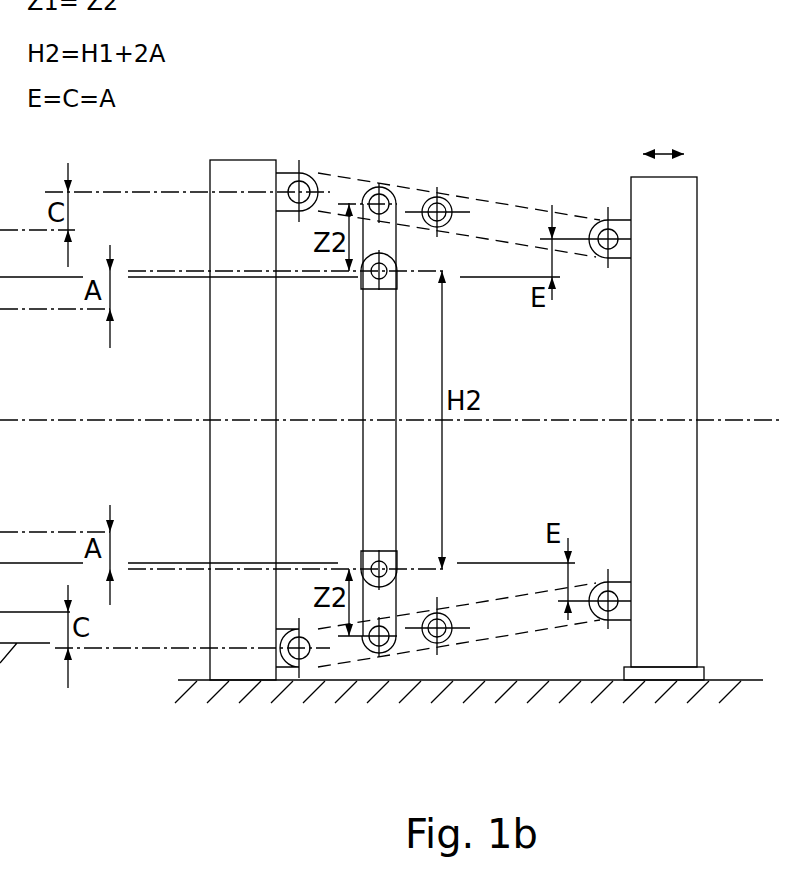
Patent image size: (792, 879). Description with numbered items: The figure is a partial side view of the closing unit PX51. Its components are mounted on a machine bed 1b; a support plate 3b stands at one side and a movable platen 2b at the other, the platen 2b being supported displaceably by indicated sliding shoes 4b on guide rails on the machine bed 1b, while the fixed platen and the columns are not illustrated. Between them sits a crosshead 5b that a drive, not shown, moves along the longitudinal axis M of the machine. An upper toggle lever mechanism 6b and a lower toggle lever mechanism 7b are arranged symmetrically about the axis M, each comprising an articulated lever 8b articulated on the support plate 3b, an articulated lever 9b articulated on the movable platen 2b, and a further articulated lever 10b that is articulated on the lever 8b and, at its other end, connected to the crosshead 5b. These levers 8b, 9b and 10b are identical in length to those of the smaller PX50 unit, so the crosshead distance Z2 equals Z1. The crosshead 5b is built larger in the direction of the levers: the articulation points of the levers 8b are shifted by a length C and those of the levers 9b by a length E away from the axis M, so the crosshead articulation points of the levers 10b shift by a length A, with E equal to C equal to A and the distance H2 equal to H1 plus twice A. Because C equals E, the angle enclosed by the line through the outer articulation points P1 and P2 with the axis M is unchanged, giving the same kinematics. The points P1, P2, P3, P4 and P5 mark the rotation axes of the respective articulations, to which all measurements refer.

The machine bed 1b is at (702, 698).
The movable platen 2b is at (687, 177).
The support plate 3b is at (243, 160).
The sliding shoes 4b is at (675, 668).
The crosshead 5b is at (385, 348).
The upper toggle lever mechanism 6b is at (507, 172).
The lower toggle lever mechanism 7b is at (498, 660).
The articulated lever to the support plate 8b is at (333, 195).
The articulated lever to the movable platen 9b is at (530, 230).
The articulated lever to the crosshead 10b is at (382, 237).
The articulation point P1 is at (298, 181).
The articulation point P2 is at (609, 221).
The articulation point P3 is at (437, 190).
The articulation point P4 is at (381, 193).
The articulation point P5 is at (372, 278).
The longitudinal axis of the machine M is at (740, 418).